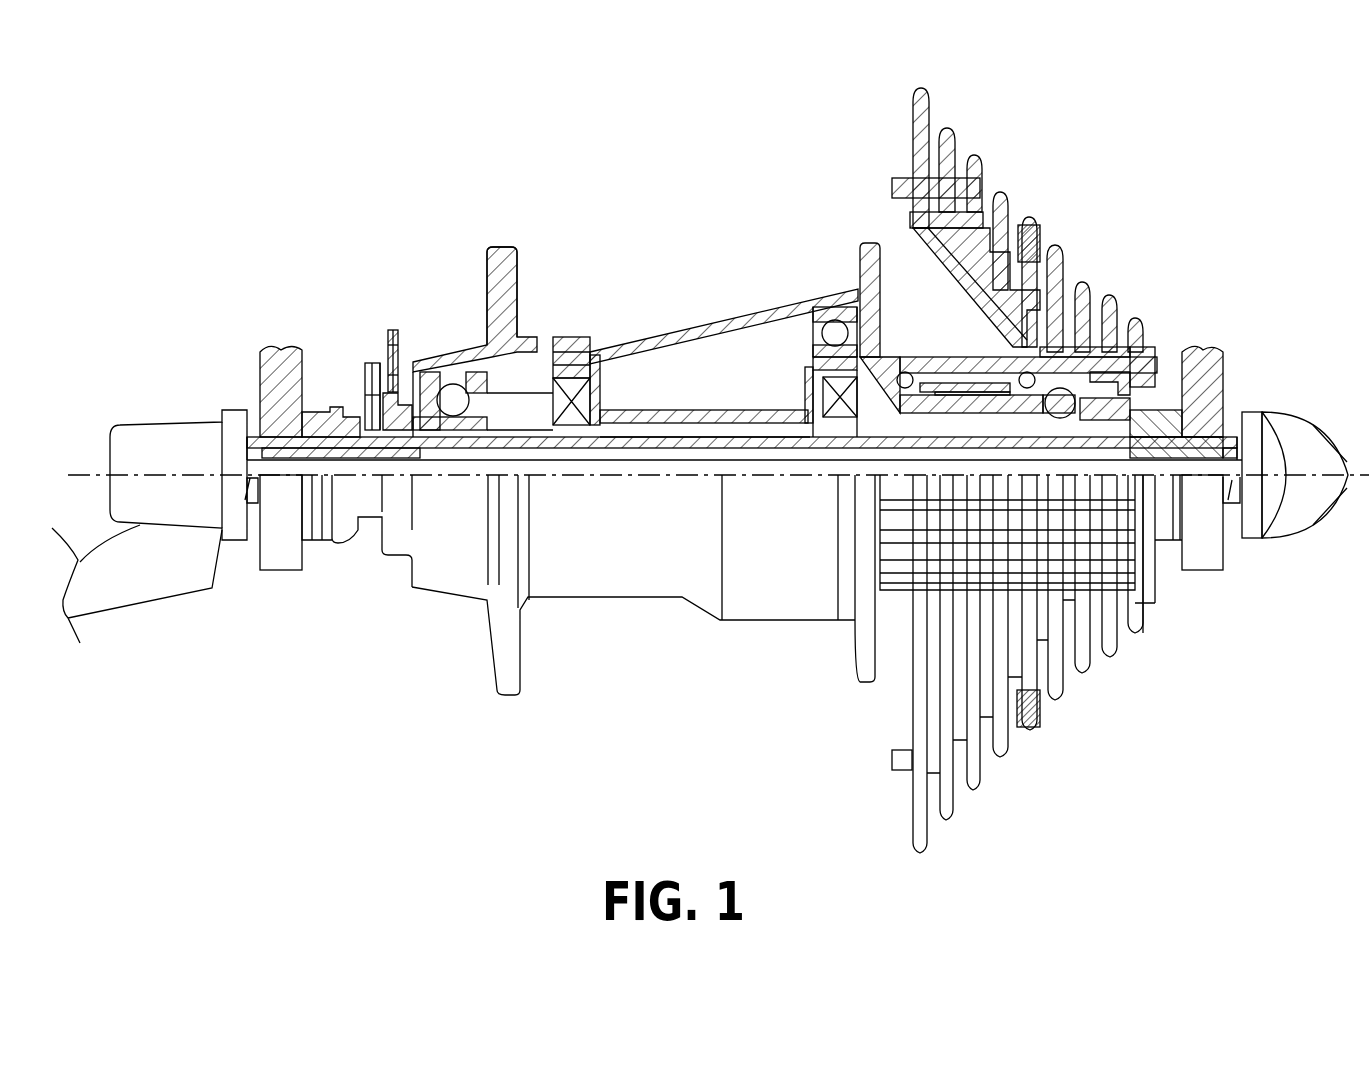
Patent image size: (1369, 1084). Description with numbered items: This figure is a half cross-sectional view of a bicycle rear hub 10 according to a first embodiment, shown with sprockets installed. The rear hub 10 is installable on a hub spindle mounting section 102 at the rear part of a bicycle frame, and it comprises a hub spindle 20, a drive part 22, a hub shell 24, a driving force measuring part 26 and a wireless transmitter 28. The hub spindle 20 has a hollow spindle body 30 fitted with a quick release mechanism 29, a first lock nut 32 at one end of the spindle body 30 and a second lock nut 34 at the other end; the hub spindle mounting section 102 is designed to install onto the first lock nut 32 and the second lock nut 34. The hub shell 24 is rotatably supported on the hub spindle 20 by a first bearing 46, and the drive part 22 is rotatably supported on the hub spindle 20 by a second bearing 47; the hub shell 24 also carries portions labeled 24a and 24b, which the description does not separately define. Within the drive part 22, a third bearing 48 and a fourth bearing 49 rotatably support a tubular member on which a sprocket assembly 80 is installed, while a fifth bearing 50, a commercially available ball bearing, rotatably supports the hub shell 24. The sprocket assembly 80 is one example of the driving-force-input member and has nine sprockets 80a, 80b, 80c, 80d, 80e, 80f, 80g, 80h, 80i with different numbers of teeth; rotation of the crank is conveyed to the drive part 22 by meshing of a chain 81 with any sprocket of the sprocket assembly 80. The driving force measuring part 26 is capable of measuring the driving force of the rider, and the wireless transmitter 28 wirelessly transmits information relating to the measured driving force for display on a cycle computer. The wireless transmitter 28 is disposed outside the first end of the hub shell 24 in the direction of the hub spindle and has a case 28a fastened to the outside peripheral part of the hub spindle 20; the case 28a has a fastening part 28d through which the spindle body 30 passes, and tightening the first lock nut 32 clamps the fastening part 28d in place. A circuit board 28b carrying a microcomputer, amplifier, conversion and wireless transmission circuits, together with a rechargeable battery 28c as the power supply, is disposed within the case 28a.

The bicycle rear hub 10 is at (637, 258).
The hub spindle 20 is at (577, 350).
The drive part 22 is at (952, 350).
The hub shell 24 is at (715, 318).
The first hub flange 24a is at (507, 248).
The second hub flange 24b is at (872, 248).
The driving force measuring part 26 is at (810, 382).
The wireless transmitter 28 is at (405, 350).
The case 28a is at (395, 332).
The circuit board 28b is at (392, 335).
The rechargeable battery 28c is at (366, 368).
The fastening part 28d is at (370, 362).
The quick release mechanism 29 is at (177, 443).
The spindle body 30 is at (667, 412).
The first lock nut 32 is at (322, 530).
The second lock nut 34 is at (1165, 380).
The first bearing 46 is at (437, 385).
The second bearing 47 is at (1108, 370).
The third bearing 48 is at (905, 375).
The fourth bearing 49 is at (1045, 355).
The fifth bearing 50 is at (805, 340).
The sprocket assembly 80 is at (1070, 226).
The sprocket 80a is at (1135, 636).
The sprocket 80b is at (1110, 660).
The sprocket 80c is at (1082, 676).
The sprocket 80d is at (1055, 703).
The sprocket 80e is at (1030, 733).
The sprocket 80f is at (1000, 760).
The sprocket 80g is at (973, 793).
The sprocket 80h is at (946, 823).
The sprocket 80i is at (920, 856).
The chain 81 is at (1040, 225).
The hub spindle mounting section 102 is at (277, 350).